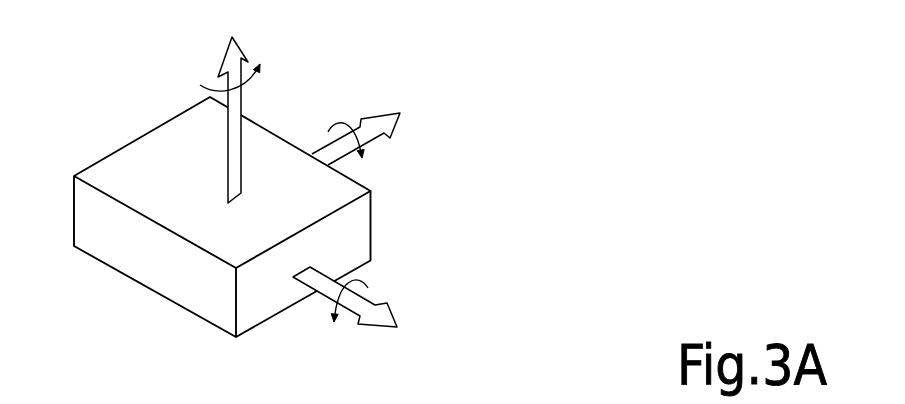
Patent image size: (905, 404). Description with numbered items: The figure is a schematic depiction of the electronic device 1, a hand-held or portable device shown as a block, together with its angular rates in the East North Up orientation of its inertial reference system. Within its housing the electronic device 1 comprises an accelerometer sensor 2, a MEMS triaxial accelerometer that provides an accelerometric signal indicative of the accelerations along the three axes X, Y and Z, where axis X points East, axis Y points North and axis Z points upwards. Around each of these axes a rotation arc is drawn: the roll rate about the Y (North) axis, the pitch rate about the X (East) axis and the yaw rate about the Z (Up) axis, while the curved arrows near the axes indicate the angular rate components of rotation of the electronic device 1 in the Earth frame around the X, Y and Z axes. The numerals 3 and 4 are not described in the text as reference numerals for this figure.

The electronic device 1 is at (108, 266).
The accelerometer sensor 2 is at (242, 103).
The y (NORTH) axis arrow with roll rate Omega_R and gravity component g_y (axis labe 3 is at (394, 127).
The x (EAST) axis arrow with pitch rate Omega_P and gravity component g_x (axis labe 4 is at (364, 318).